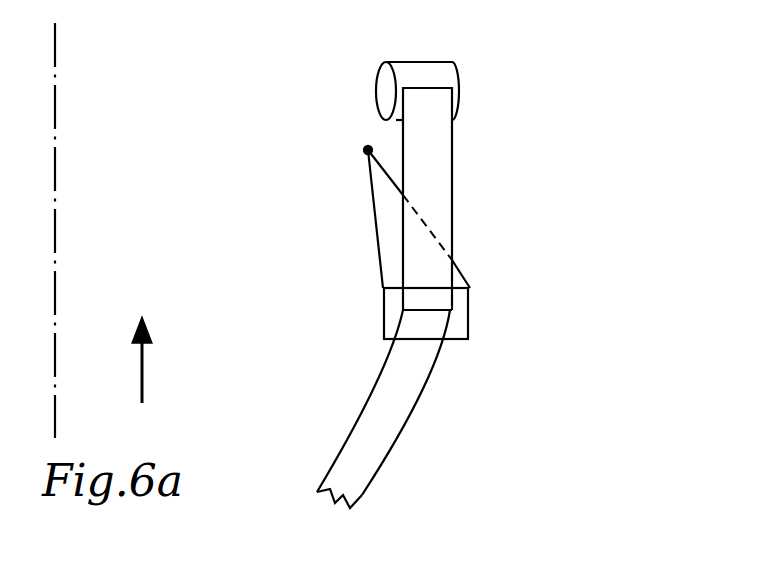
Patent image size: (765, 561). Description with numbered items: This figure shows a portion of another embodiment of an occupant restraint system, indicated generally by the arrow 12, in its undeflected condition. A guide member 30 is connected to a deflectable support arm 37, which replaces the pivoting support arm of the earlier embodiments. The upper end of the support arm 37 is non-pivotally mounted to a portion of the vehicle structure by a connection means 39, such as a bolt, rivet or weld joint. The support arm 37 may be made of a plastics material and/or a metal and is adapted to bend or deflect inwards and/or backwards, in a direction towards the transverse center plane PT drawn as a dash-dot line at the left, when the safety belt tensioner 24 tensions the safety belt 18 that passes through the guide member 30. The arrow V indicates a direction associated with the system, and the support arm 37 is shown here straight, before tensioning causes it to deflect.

The guide pulley assembly 12 is at (553, 120).
The safety belt 18 is at (372, 445).
The safety belt tensioner 24 is at (383, 87).
The guide member 30 is at (391, 307).
The deflectable support arm 37 is at (393, 215).
The connection means 39 is at (366, 153).
The transverse center plane PT is at (55, 62).
The feed direction V is at (142, 378).